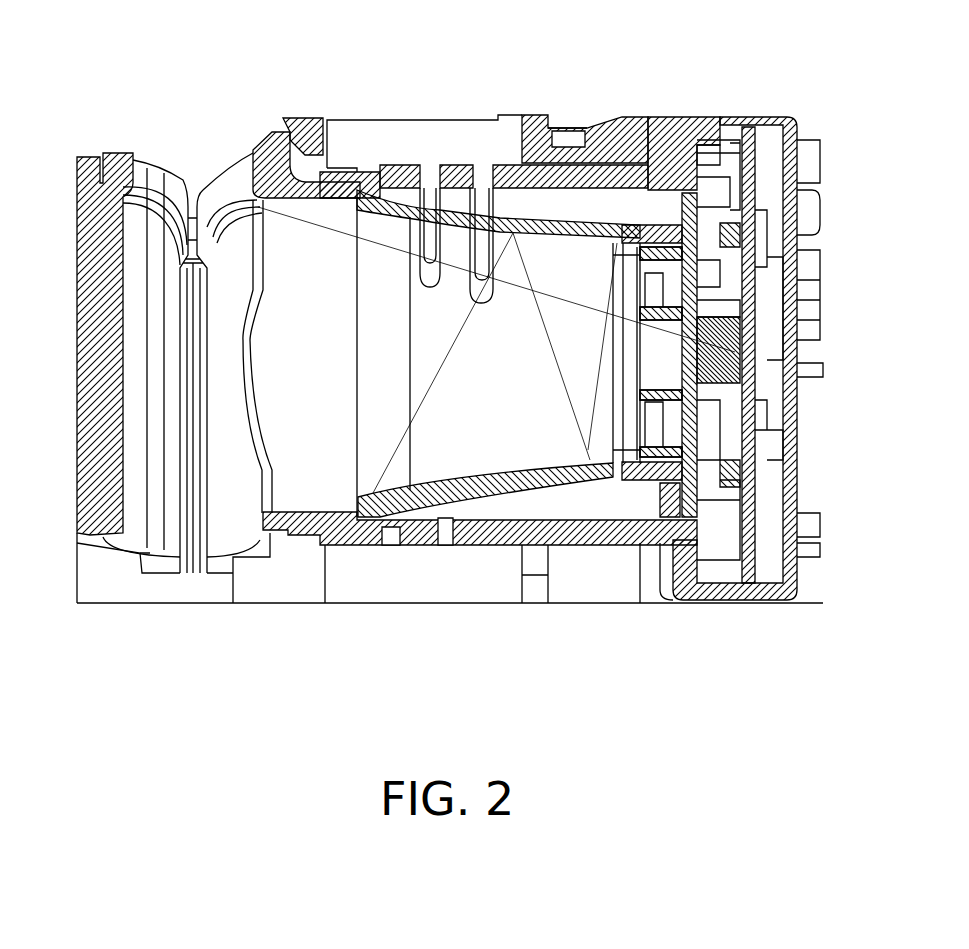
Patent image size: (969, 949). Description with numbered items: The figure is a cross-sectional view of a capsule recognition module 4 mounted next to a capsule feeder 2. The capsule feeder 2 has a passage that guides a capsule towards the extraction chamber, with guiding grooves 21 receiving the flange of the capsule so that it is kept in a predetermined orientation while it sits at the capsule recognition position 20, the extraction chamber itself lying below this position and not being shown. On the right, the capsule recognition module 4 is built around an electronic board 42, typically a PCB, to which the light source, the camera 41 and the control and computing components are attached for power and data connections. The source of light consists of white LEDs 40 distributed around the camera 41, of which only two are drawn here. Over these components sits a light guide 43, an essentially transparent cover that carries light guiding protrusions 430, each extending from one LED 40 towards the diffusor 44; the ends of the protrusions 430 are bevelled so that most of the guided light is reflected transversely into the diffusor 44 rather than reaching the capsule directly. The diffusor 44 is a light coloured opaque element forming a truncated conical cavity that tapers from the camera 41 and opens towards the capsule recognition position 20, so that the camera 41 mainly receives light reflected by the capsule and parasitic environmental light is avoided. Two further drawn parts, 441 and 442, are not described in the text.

The capsule feeder 2 is at (188, 185).
The capsule recognition module 4 is at (503, 82).
The capsule recognition position 20 is at (145, 365).
The guiding grooves 21 is at (196, 518).
The LED 40 is at (737, 230).
The camera 41 is at (737, 350).
The electronic board 42 is at (750, 522).
The light guide 43 is at (688, 492).
The diffusor 44 is at (412, 520).
The light guiding protrusions 430 is at (660, 226).
The inner barrel wall 441 is at (638, 418).
The lens element 442 is at (358, 495).